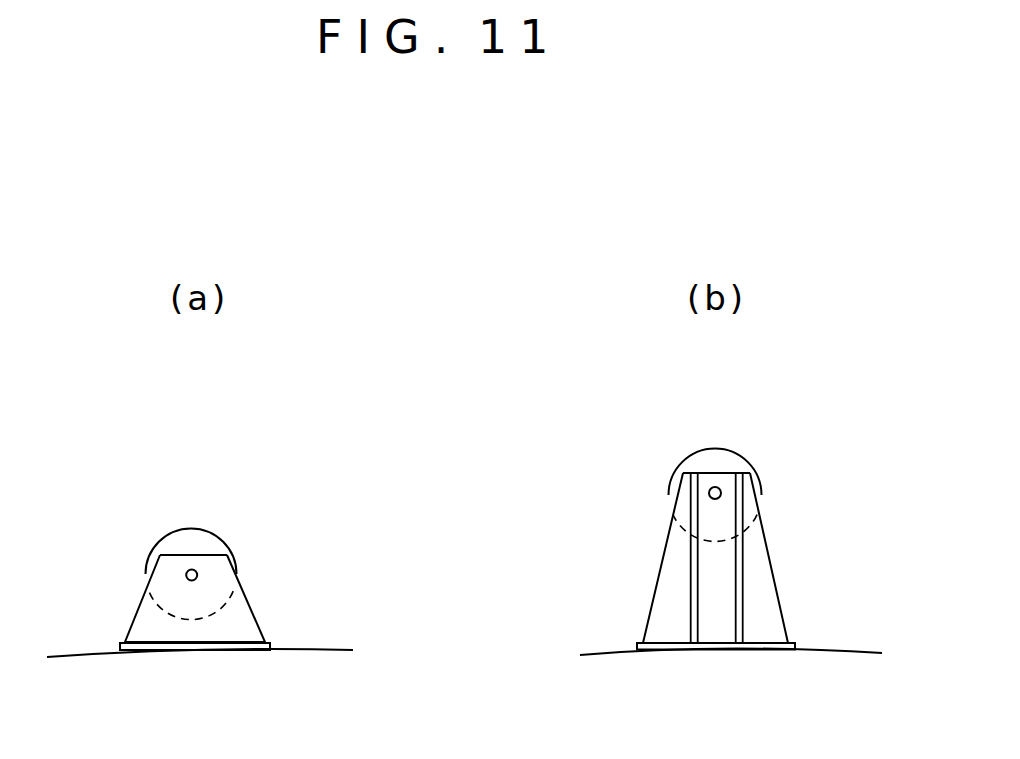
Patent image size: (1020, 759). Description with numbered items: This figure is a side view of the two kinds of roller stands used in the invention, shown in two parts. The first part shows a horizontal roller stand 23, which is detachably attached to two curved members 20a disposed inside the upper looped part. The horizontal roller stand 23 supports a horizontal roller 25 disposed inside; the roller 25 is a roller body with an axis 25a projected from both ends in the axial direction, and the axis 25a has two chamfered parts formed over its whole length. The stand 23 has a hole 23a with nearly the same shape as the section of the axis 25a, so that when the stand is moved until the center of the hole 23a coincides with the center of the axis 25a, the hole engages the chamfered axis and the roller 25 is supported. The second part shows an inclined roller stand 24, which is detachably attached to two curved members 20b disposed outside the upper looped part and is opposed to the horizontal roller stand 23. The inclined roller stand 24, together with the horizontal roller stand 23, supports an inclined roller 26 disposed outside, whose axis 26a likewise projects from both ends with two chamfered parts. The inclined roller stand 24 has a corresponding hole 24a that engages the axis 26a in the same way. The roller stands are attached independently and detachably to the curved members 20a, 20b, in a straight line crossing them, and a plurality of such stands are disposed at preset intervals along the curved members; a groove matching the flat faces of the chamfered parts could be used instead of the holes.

The curved member 20a is at (327, 668).
The horizontal roller stand 23 is at (242, 620).
The hole 23a is at (197, 571).
The horizontal roller 25 is at (198, 542).
The axis 25a is at (185, 570).
The curved member 20b is at (832, 665).
The inclined roller stand 24 is at (668, 587).
The hole 24a is at (718, 488).
The inclined roller 26 is at (725, 458).
The axis 26a is at (713, 482).